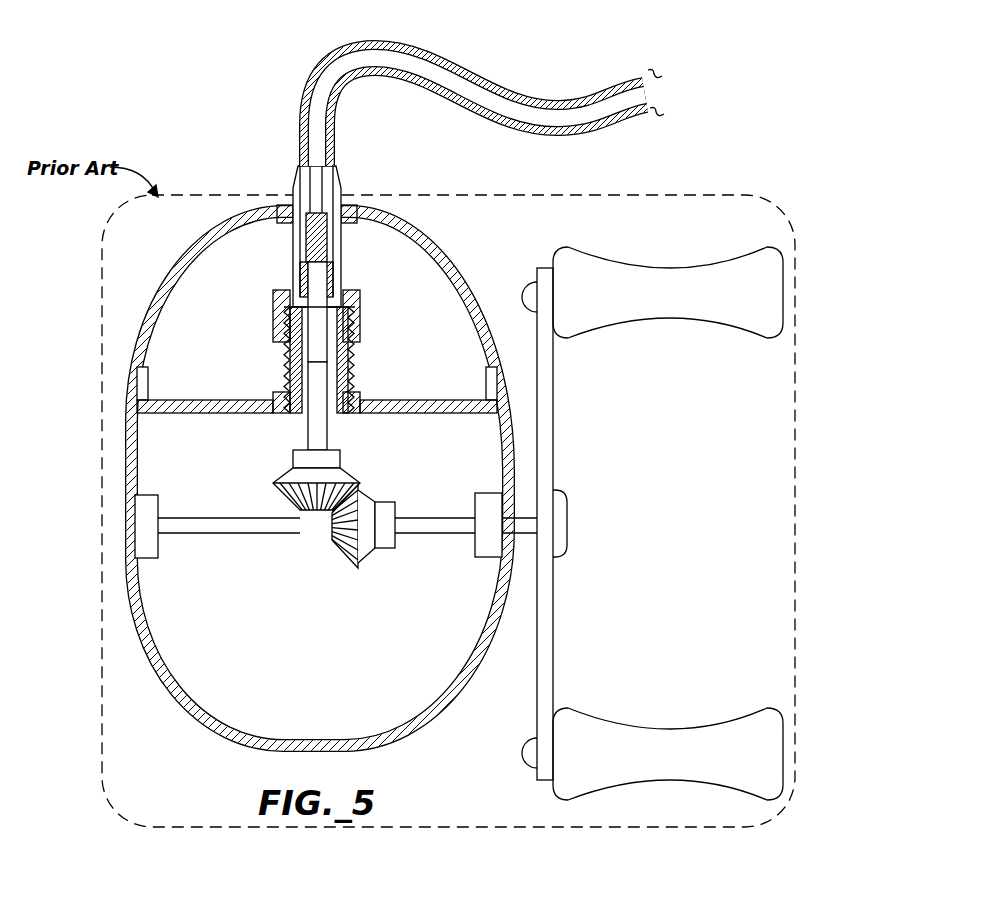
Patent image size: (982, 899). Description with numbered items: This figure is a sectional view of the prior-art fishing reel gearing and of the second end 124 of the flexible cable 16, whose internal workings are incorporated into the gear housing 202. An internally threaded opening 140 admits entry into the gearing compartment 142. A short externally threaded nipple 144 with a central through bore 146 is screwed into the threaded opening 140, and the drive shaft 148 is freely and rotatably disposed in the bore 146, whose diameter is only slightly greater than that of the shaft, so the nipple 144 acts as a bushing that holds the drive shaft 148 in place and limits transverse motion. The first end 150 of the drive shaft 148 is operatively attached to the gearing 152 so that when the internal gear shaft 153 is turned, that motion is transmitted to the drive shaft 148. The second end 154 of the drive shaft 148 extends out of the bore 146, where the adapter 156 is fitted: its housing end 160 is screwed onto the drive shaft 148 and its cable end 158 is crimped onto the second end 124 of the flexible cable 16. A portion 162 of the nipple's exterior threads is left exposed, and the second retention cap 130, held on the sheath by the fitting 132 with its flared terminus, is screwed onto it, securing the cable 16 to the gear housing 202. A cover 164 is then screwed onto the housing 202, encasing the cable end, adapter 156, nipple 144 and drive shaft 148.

The flexible cable 16 is at (637, 82).
The second end 124 is at (268, 155).
The second retention cap 130 is at (362, 337).
The fitting 132 is at (293, 235).
The internally threaded opening 140 is at (290, 413).
The gearing compartment 142 is at (331, 667).
The nipple 144 is at (347, 383).
The central through bore 146 is at (347, 357).
The drive shaft 148 is at (306, 432).
The first end 150 is at (327, 440).
The gearing 152 is at (337, 545).
The internal gear shaft 153 is at (442, 533).
The second end 154 is at (327, 285).
The adapter 156 is at (300, 262).
The cable end 158 is at (333, 230).
The housing end 160 is at (327, 280).
The exposed portion of exterior threads 162 is at (273, 330).
The cover 164 is at (450, 243).
The gear housing 202 is at (184, 746).